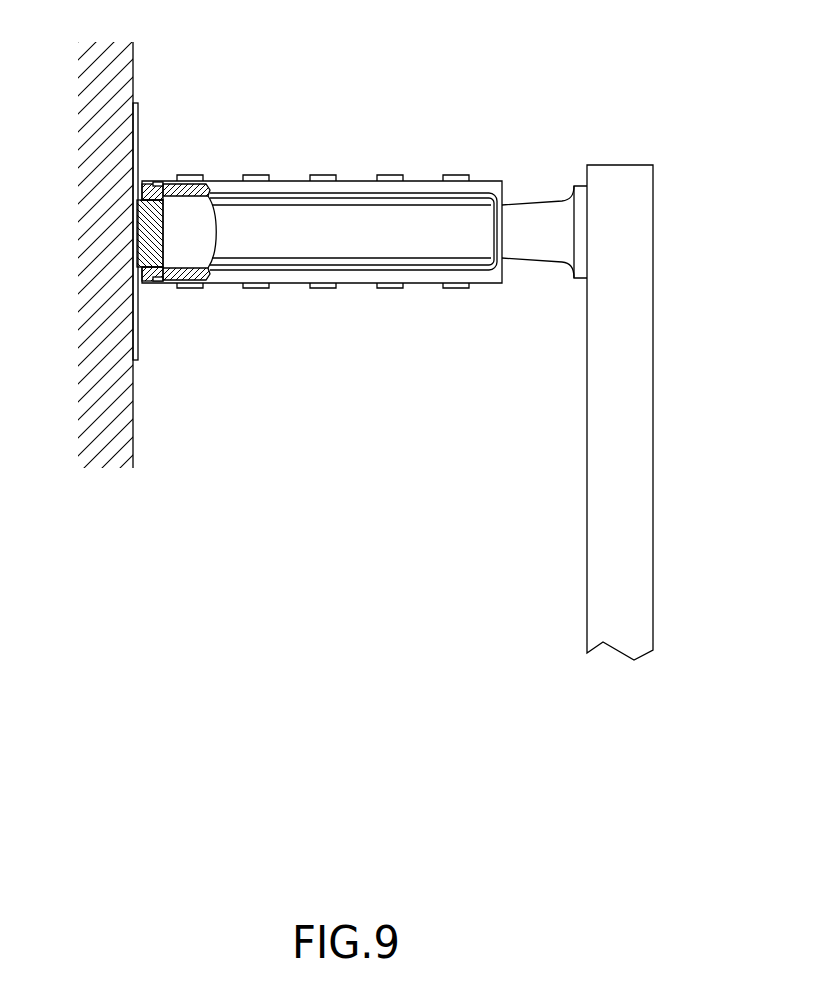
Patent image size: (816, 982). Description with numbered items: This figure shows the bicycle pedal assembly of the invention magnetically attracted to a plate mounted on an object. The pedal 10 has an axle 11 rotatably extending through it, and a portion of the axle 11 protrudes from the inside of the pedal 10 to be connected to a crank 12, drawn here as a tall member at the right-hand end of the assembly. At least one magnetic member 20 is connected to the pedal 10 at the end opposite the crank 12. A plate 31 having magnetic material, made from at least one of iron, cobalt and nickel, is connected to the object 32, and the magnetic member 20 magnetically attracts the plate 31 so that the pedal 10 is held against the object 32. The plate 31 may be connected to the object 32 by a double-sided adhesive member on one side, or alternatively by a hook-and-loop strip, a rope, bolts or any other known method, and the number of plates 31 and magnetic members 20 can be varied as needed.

The pedal 10 is at (365, 185).
The axle 11 is at (545, 208).
The crank 12 is at (643, 385).
The magnetic member 20 is at (142, 222).
The plate 31 is at (136, 322).
The object 32 is at (122, 417).